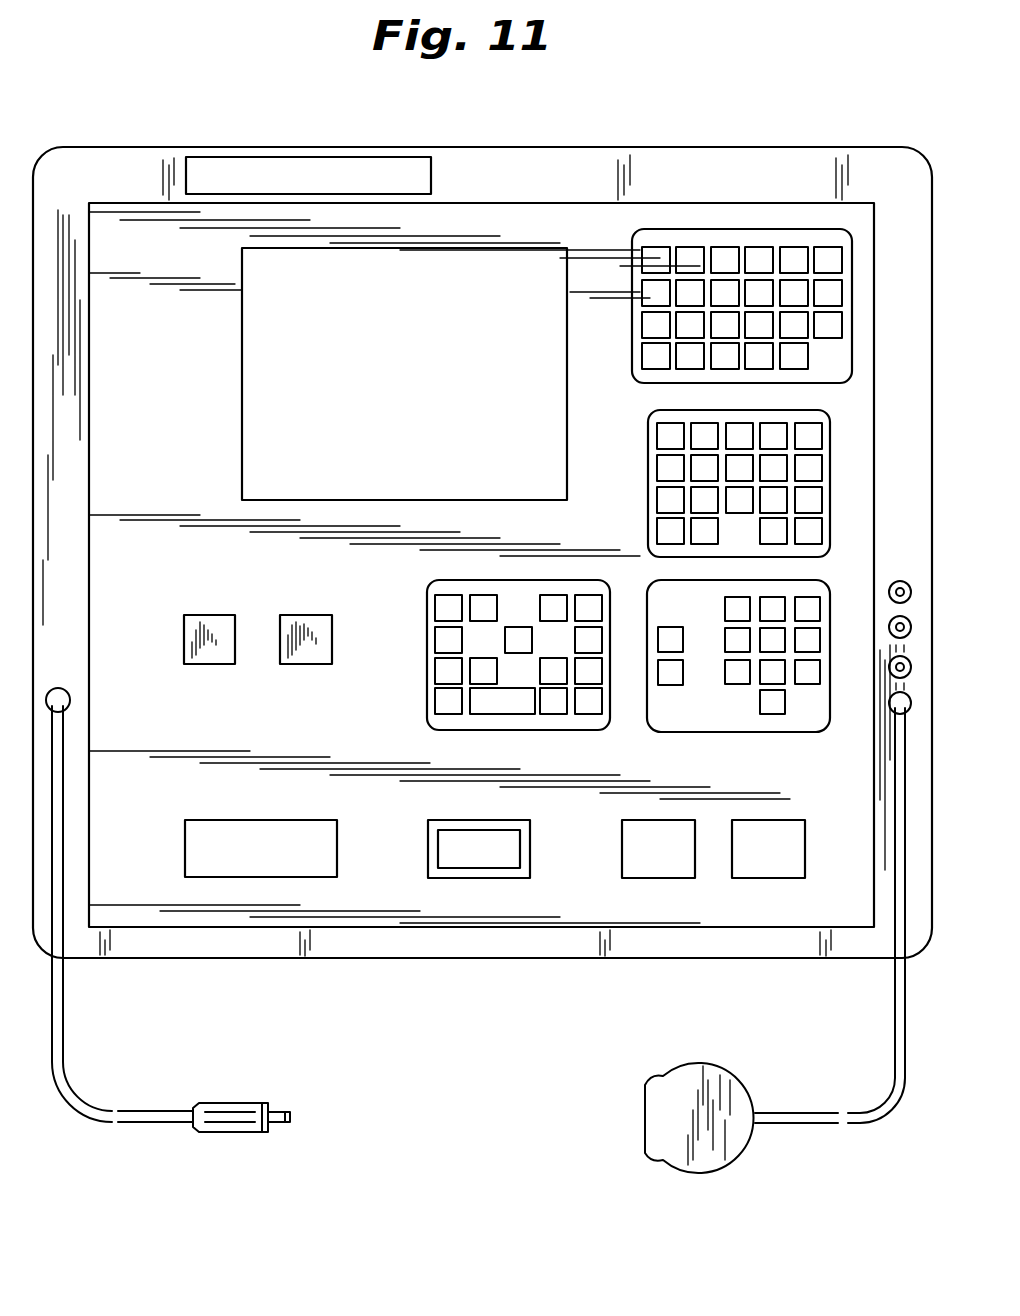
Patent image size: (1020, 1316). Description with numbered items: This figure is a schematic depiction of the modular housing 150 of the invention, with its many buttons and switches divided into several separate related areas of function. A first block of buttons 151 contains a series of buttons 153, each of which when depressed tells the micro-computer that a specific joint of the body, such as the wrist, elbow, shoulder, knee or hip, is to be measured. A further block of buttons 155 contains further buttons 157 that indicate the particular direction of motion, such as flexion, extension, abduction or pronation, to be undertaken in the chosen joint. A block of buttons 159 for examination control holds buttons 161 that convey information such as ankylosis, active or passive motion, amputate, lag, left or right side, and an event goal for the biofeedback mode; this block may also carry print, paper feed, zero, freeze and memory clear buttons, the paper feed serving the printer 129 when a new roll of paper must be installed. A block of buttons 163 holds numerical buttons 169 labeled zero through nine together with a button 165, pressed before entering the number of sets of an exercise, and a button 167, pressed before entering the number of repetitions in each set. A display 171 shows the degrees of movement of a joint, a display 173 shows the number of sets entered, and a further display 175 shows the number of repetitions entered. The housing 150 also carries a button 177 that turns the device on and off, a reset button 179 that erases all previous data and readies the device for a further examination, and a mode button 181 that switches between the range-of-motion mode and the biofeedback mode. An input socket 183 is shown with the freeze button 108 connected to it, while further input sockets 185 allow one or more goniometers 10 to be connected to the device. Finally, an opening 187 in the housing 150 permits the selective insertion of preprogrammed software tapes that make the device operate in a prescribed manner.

The goniometer 10 is at (692, 1172).
The freeze button 108 is at (242, 1134).
The printer 129 is at (432, 262).
The modular housing 150 is at (724, 100).
The first block of buttons 151 is at (828, 232).
The buttons 153 is at (823, 327).
The further block of buttons 155 is at (645, 460).
The further buttons 157 is at (818, 467).
The block of buttons 159 is at (427, 683).
The buttons 161 is at (507, 696).
The block of buttons 163 is at (702, 734).
The button 165 is at (668, 638).
The button 167 is at (666, 674).
The numerical buttons 169 is at (786, 701).
The display 171 is at (258, 823).
The display 173 is at (670, 825).
The display 175 is at (770, 826).
The button 177 is at (236, 630).
The reset button 179 is at (332, 648).
The mode button 181 is at (500, 835).
The input socket 183 is at (69, 695).
The further input sockets 185 is at (897, 617).
The opening 187 is at (302, 160).